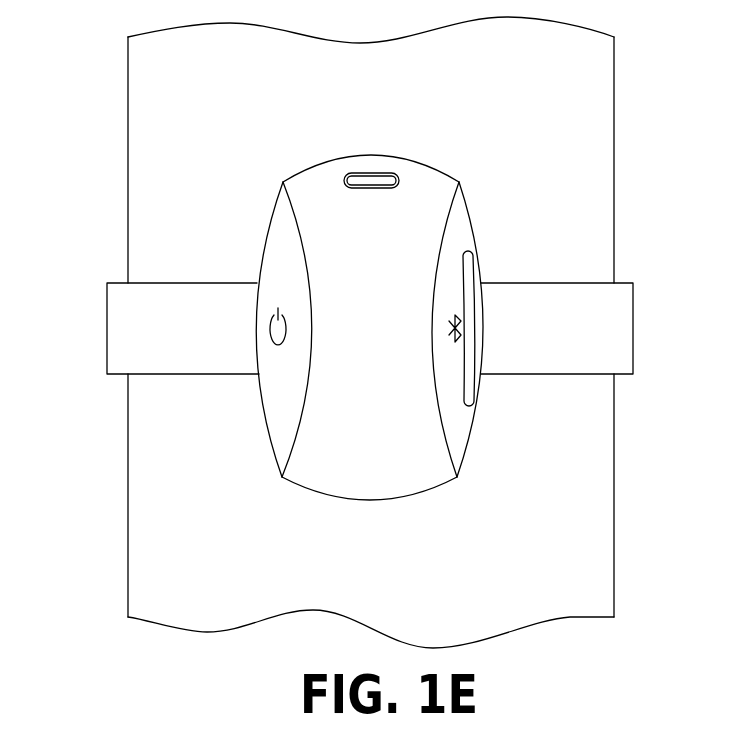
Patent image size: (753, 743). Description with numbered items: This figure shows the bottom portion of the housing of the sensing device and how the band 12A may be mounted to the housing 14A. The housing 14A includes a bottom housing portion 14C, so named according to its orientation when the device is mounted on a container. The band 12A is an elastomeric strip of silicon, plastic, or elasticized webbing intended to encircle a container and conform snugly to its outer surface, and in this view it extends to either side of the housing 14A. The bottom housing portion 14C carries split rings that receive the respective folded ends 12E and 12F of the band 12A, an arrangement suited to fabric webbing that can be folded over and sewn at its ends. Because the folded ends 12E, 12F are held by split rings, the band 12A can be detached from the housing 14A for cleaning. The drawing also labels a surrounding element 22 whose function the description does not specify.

The mounting surface 22 is at (614, 162).
The band 12A is at (157, 283).
The folded end of the band 12E is at (193, 357).
The folded end of the band 12F is at (527, 343).
The housing 14A is at (300, 168).
The bottom housing portion 14C is at (363, 433).